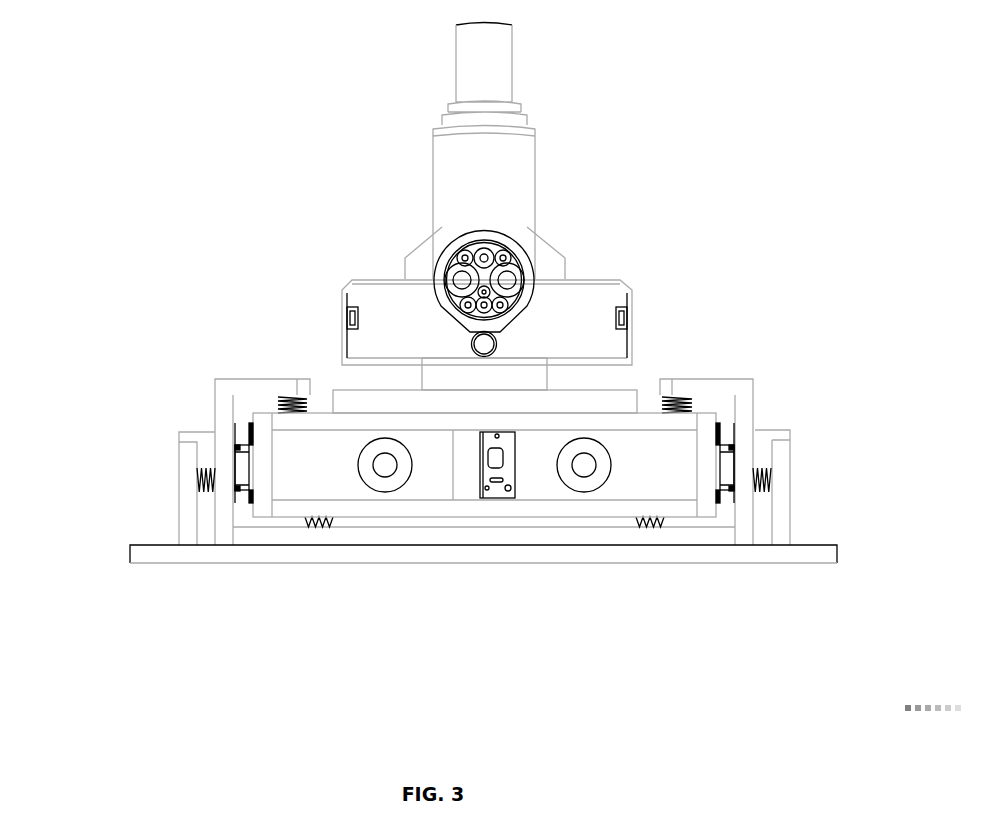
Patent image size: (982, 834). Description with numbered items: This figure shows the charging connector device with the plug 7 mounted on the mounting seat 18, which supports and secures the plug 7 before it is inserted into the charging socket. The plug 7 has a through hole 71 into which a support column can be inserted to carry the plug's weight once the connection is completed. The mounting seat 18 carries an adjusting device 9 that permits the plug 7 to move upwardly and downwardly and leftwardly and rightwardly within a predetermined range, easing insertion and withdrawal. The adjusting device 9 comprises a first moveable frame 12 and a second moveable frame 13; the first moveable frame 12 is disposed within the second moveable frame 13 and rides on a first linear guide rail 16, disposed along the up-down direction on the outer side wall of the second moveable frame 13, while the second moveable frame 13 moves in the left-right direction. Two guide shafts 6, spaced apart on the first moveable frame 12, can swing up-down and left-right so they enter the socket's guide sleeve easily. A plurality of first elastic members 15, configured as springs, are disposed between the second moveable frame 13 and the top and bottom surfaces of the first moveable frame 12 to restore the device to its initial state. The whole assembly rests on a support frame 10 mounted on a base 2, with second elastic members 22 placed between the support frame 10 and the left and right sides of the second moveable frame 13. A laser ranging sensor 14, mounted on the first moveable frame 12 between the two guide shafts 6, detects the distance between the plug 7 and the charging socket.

The base 2 is at (560, 553).
The guide shaft 6 is at (383, 465).
The plug 7 is at (517, 263).
The through hole 71 is at (486, 342).
The adjusting device 9 is at (664, 465).
The support frame 10 is at (187, 487).
The first moveable frame 12 is at (637, 423).
The second moveable frame 13 is at (743, 457).
The laser ranging sensor 14 is at (497, 460).
The first elastic member 15 is at (290, 397).
The first linear guide rail 16 is at (245, 457).
The mounting seat 18 is at (339, 331).
The second elastic member 22 is at (200, 493).